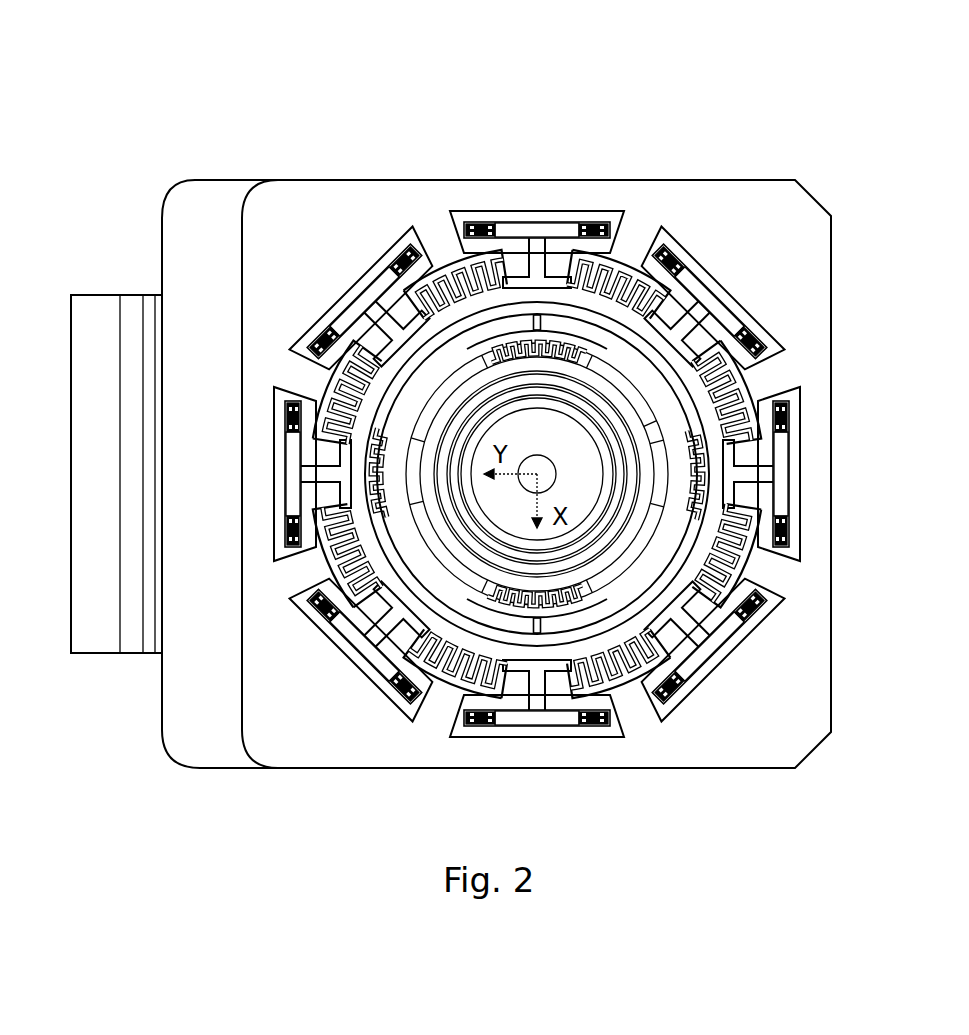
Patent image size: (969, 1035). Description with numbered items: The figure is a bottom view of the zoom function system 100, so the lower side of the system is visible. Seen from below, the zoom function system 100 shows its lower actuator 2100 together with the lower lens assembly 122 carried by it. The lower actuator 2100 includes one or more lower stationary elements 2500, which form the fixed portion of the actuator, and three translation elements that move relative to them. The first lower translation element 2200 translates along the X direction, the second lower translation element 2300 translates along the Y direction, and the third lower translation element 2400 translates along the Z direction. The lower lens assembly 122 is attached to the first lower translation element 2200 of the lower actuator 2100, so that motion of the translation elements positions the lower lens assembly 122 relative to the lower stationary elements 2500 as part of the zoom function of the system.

The zoom function system 100 is at (148, 100).
The lower lens assembly 122 is at (500, 428).
The lower actuator 2100 is at (628, 368).
The first lower translation element 2200 is at (593, 372).
The second lower translation element 2300 is at (505, 343).
The third lower translation element 2400 is at (428, 300).
The lower stationary element 2500 is at (328, 550).